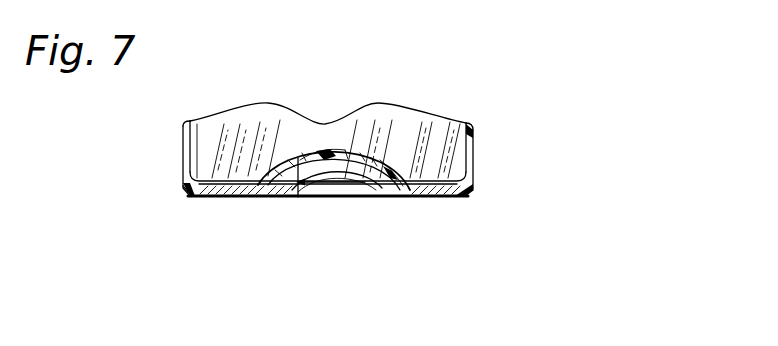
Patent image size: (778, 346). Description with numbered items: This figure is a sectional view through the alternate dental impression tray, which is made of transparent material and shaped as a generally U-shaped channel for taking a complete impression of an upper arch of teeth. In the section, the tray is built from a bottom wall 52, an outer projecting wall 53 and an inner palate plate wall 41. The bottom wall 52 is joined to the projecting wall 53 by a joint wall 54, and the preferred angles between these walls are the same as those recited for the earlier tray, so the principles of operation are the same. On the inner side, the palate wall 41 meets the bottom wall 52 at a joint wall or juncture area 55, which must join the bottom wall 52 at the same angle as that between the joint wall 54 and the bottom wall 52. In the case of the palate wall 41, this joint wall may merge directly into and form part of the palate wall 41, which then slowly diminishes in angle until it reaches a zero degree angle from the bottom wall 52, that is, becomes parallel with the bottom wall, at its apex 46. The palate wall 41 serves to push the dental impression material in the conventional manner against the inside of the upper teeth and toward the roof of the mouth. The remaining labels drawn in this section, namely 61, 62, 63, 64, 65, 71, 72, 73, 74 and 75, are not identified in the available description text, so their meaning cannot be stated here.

The palate plate wall 41 is at (357, 175).
The apex 46 is at (348, 178).
The bottom wall 52 is at (418, 197).
The projecting wall 53 is at (472, 143).
The joint wall 54 is at (474, 194).
The joint wall 55 is at (383, 197).
The support member 61 is at (298, 197).
The base layer 62 is at (216, 205).
The left side wall 63 is at (182, 150).
The lower corner 64 is at (180, 193).
The intermediate layer 65 is at (282, 197).
The dome top surface 71 is at (318, 145).
The floor surface 72 is at (231, 170).
The inner wall 73 is at (204, 142).
The floor layer 74 is at (208, 170).
The dome side surface 75 is at (399, 167).